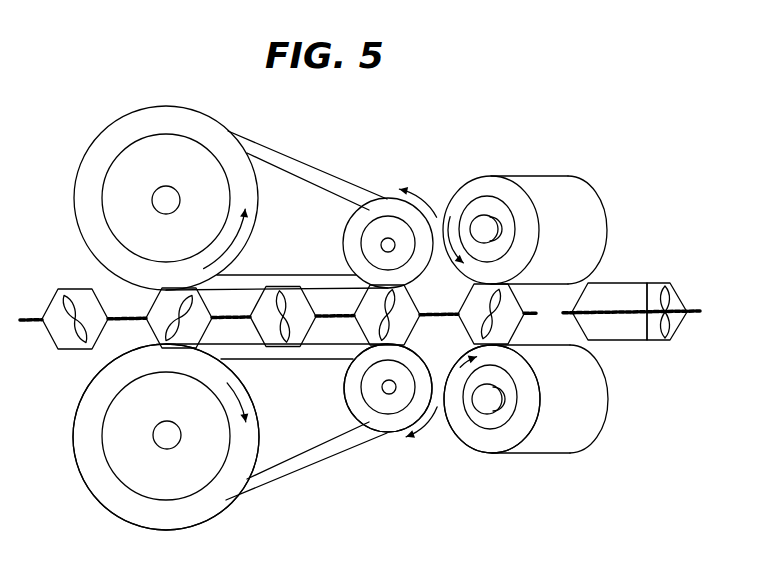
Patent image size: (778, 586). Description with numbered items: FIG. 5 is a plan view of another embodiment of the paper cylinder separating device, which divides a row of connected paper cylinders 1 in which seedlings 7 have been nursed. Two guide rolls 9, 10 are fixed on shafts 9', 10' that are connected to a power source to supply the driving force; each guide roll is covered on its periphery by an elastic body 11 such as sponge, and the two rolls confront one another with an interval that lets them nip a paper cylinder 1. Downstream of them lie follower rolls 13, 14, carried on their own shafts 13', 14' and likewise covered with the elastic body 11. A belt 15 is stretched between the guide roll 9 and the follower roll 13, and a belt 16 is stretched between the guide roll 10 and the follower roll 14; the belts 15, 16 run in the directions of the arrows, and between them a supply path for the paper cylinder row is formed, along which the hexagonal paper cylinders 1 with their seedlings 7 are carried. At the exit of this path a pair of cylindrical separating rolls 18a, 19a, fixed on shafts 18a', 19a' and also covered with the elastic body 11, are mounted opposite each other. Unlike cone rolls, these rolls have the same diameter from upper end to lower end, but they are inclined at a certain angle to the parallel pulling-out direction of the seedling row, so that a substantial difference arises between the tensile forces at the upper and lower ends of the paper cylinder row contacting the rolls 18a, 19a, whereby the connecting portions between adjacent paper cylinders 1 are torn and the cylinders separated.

The paper cylinder 1 is at (66, 348).
The seedlings 7 is at (656, 341).
The guide roll 9 is at (166, 189).
The shaft 9' is at (181, 187).
The guide roll 10 is at (166, 454).
The shaft 10' is at (179, 451).
The elastic body 11 is at (122, 511).
The follower roll 13 is at (370, 237).
The shaft of follower roll 13' is at (348, 255).
The follower roll 14 is at (371, 391).
The shaft of follower roll 14' is at (349, 383).
The belt 15 is at (327, 180).
The belt 16 is at (293, 468).
The cylindrical separating roll 18a is at (525, 211).
The shaft of separating roll 18a' is at (465, 199).
The cylindrical separating roll 19a is at (526, 423).
The shaft of separating roll 19a' is at (518, 442).